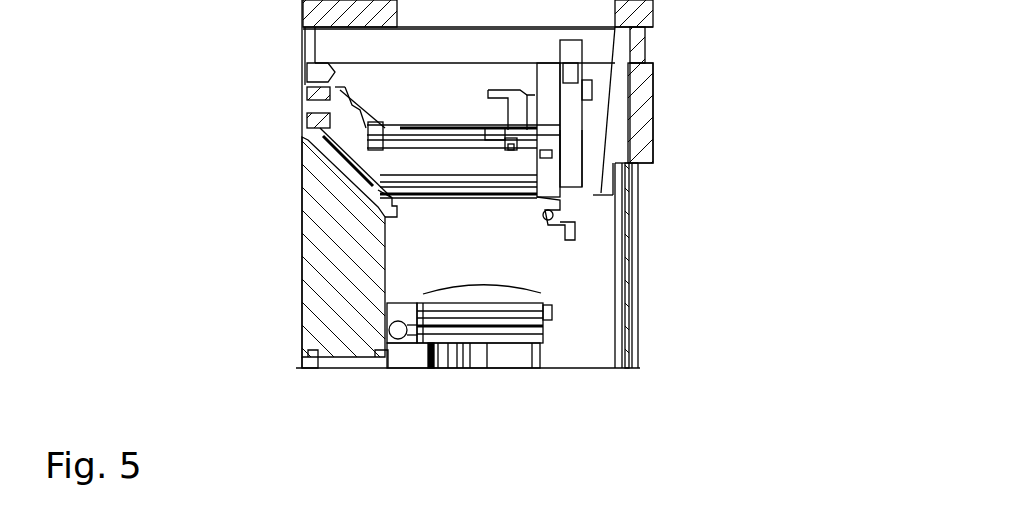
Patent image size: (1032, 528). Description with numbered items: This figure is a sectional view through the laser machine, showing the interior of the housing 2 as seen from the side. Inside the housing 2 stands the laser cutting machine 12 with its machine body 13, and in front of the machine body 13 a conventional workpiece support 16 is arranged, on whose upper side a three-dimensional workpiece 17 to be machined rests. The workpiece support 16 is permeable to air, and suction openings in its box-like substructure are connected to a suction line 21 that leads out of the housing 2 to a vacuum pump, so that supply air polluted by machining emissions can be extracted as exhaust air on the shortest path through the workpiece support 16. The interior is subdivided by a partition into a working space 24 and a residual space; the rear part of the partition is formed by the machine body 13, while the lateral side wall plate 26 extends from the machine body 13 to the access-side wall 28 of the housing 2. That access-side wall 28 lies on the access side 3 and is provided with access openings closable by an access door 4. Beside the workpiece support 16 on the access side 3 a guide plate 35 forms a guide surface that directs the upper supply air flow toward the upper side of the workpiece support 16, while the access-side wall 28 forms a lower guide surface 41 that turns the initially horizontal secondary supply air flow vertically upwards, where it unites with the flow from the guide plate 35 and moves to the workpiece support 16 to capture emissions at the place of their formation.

The housing 2 is at (668, 75).
The access side 3 is at (680, 305).
The access door 4 is at (640, 241).
The laser cutting machine 12 is at (292, 181).
The machine body 13 is at (318, 247).
The workpiece support 16 is at (414, 380).
The workpiece 17 is at (481, 283).
The suction line 21 is at (389, 330).
The working space 24 is at (580, 283).
The side wall plate 26 is at (462, 234).
The access-side wall 28 is at (620, 203).
The guide plate 35 is at (608, 117).
The lower guide surface 41 is at (613, 341).